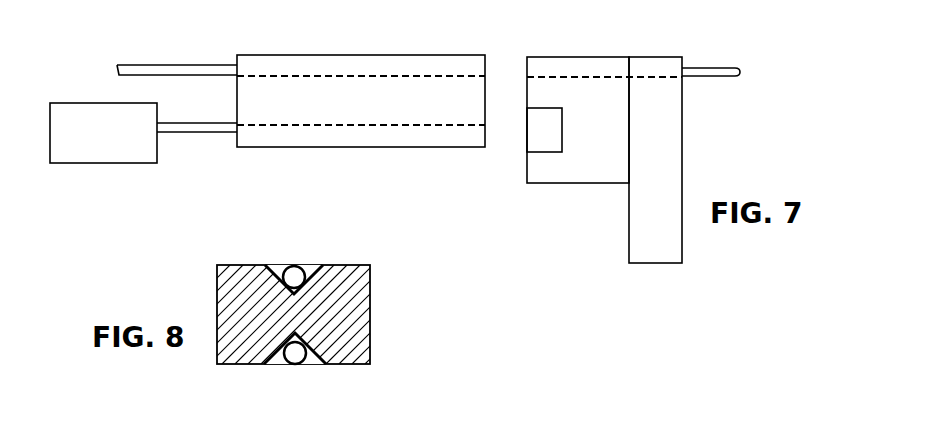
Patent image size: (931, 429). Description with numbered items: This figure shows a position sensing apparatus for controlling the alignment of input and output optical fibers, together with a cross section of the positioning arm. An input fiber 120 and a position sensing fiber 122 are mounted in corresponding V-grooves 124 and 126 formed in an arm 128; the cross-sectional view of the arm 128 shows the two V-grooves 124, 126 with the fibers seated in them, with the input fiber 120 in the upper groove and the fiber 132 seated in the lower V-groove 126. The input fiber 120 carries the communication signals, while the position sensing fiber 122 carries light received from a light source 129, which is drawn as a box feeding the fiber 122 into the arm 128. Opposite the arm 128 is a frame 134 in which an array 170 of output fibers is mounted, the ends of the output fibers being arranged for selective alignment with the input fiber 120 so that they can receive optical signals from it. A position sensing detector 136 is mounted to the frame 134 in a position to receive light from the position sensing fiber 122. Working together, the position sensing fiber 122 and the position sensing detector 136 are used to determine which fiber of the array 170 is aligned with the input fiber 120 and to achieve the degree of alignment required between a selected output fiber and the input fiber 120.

In FIG. 7, the input fiber 120 is at (170, 65).
In FIG. 8, the input fiber 120 is at (297, 269).
In FIG. 7, the position sensing fiber 122 is at (190, 132).
In FIG. 7, the V-groove 124 is at (285, 76).
In FIG. 8, the V-groove 124 is at (278, 268).
In FIG. 8, the V-groove 126 is at (275, 364).
In FIG. 7, the arm 128 is at (353, 147).
In FIG. 7, the light source 129 is at (100, 163).
In FIG. 8, the optical fiber in lower groove 132 is at (297, 358).
In FIG. 7, the frame 134 is at (568, 183).
In FIG. 7, the position sensing detector 136 is at (527, 140).
In FIG. 7, the array of output fibers 170 is at (712, 77).